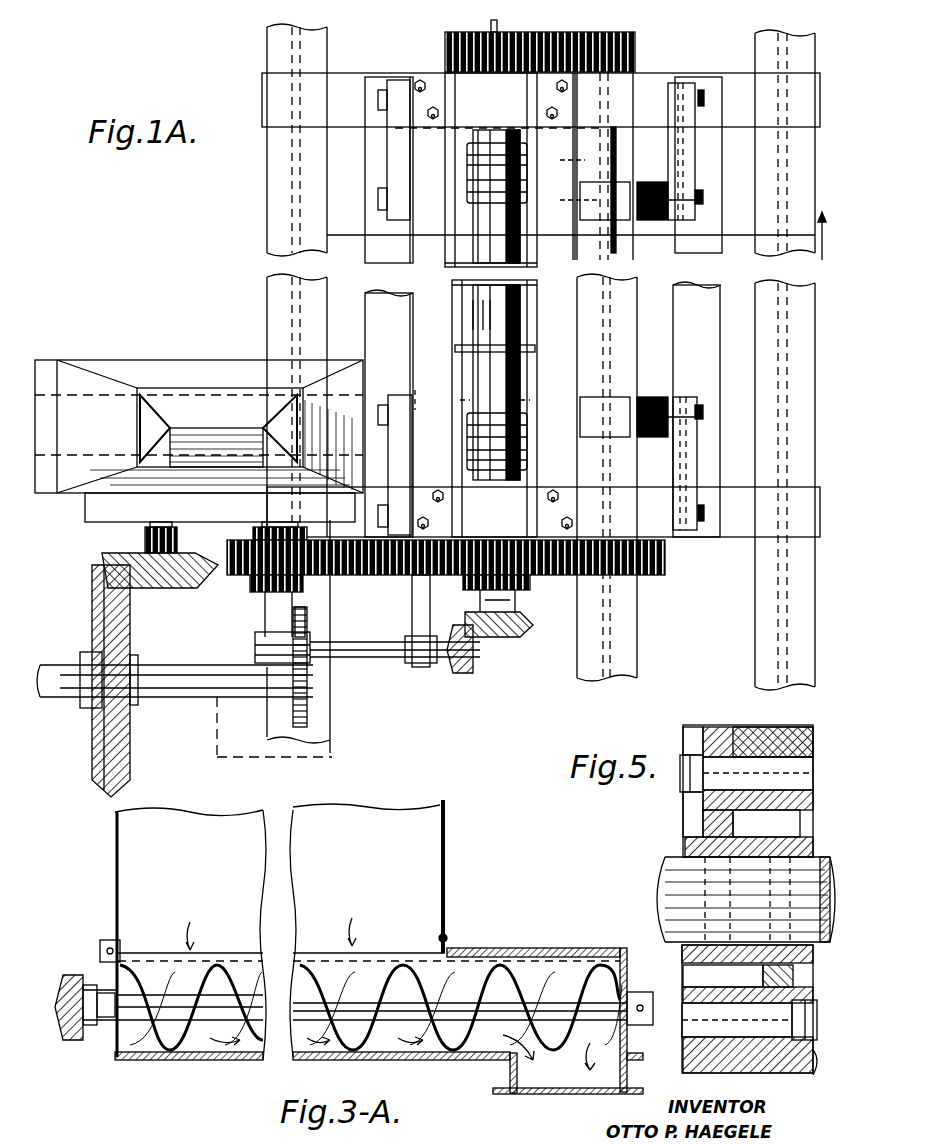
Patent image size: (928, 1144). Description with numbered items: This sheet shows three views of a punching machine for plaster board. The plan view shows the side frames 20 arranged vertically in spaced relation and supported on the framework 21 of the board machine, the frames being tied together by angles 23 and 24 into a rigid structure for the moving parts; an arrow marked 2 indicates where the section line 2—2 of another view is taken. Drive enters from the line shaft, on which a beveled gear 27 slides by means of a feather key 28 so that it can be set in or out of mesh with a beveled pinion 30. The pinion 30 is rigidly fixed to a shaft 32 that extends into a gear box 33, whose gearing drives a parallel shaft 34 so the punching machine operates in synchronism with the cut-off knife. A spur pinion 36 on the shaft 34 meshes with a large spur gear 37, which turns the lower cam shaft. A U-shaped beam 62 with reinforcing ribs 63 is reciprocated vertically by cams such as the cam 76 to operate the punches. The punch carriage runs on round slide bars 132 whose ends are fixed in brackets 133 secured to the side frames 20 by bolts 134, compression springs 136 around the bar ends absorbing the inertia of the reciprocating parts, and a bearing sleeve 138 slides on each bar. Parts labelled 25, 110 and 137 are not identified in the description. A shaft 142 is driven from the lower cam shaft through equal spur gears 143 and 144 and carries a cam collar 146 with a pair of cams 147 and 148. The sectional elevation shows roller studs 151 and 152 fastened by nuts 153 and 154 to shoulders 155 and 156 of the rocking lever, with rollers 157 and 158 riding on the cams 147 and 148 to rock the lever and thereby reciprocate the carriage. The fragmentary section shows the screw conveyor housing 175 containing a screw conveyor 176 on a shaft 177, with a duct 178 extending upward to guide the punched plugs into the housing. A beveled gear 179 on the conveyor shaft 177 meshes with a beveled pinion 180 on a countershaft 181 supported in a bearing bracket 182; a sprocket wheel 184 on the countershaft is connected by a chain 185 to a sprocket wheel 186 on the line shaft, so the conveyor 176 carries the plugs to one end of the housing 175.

In FIG. 1A, the direction arrow 2 is at (820, 247).
In FIG. 1A, the side frames 20 is at (352, 82).
In FIG. 1A, the framework 21 is at (758, 608).
In FIG. 1A, the angles 23 is at (365, 225).
In FIG. 1A, the angles 24 is at (420, 248).
In FIG. 1A, the coupling 25 is at (482, 175).
In FIG. 1A, the beveled gear 27 is at (92, 745).
In FIG. 1A, the feather key 28 is at (163, 668).
In FIG. 1A, the beveled pinion 30 is at (190, 588).
In FIG. 1A, the shaft 32 is at (145, 530).
In FIG. 1A, the gear box 33 is at (172, 377).
In FIG. 1A, the parallel shaft 34 is at (253, 530).
In FIG. 1A, the spur pinion 36 is at (245, 578).
In FIG. 1A, the large spur gear 37 is at (390, 577).
In FIG. 1A, the U-shaped beam 62 is at (473, 318).
In FIG. 1A, the reinforcing ribs 63 is at (458, 348).
In FIG. 1A, the cam 76 is at (525, 440).
In FIG. 1A, the vertical shaft 110 is at (488, 221).
In FIG. 1A, the round slide bar 132 is at (703, 197).
In FIG. 1A, the brackets 133 is at (395, 162).
In FIG. 1A, the bolts 134 is at (700, 92).
In FIG. 1A, the compression springs 136 is at (658, 222).
In FIG. 1A, the bolt 137 is at (703, 412).
In FIG. 1A, the bearing sleeve 138 is at (608, 190).
In FIG. 1A, the shaft 142 is at (602, 80).
In FIG. 1A, the spur gear 143 is at (632, 36).
In FIG. 1A, the spur gear 144 is at (448, 38).
In FIG. 5, the cam collar 146 is at (790, 845).
In FIG. 5, the cam 147 is at (687, 955).
In FIG. 5, the cam 148 is at (690, 838).
In FIG. 5, the roller stud 151 is at (703, 812).
In FIG. 5, the roller stud 152 is at (690, 978).
In FIG. 5, the nut 153 is at (683, 778).
In FIG. 5, the nut 154 is at (800, 1075).
In FIG. 5, the shoulder 155 is at (690, 1068).
In FIG. 5, the shoulder 156 is at (780, 727).
In FIG. 5, the roller 157 is at (760, 1060).
In FIG. 5, the roller 158 is at (700, 735).
In FIG. 3A, the screw conveyor housing 175 is at (113, 1047).
In FIG. 3A, the screw conveyor 176 is at (192, 1047).
In FIG. 1A, the conveyor shaft 177 is at (518, 600).
In FIG. 3A, the conveyor shaft 177 is at (105, 960).
In FIG. 3A, the duct 178 is at (115, 888).
In FIG. 1A, the beveled gear 179 is at (495, 640).
In FIG. 3A, the beveled gear 179 is at (70, 978).
In FIG. 1A, the beveled pinion 180 is at (465, 675).
In FIG. 1A, the countershaft 181 is at (383, 662).
In FIG. 1A, the bearing bracket 182 is at (422, 670).
In FIG. 1A, the sprocket wheel 184 is at (312, 641).
In FIG. 1A, the chain 185 is at (307, 623).
In FIG. 1A, the sprocket wheel 186 is at (307, 716).